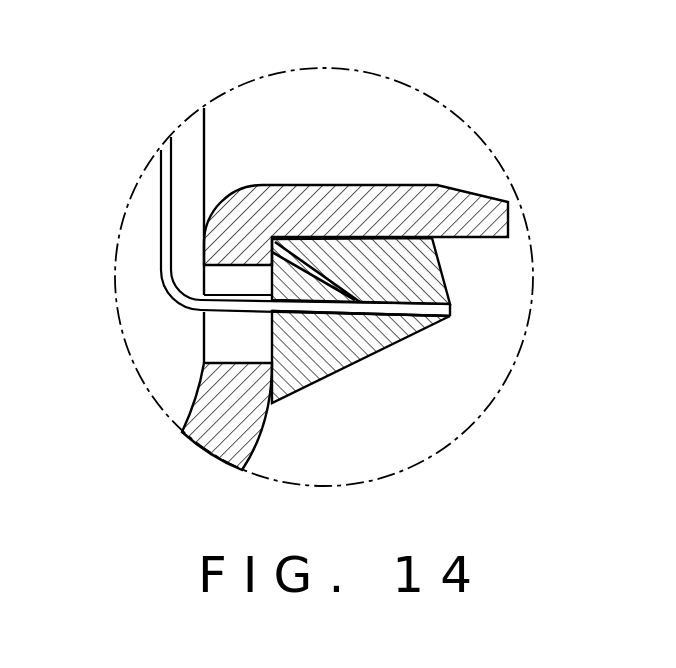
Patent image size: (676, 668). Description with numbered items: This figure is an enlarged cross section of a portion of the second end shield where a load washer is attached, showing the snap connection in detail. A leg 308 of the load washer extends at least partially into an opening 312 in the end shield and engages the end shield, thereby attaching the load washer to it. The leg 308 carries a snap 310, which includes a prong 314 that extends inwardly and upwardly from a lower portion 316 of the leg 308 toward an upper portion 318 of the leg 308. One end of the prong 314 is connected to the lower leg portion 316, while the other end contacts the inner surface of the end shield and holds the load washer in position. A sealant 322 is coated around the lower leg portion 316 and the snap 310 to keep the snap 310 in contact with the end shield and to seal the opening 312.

The leg 308 is at (327, 318).
The snap 310 is at (315, 262).
The opening 312 is at (242, 328).
The prong 314 is at (273, 245).
The lower portion of leg 316 is at (432, 311).
The upper portion of leg 318 is at (265, 310).
The sealant 322 is at (388, 268).